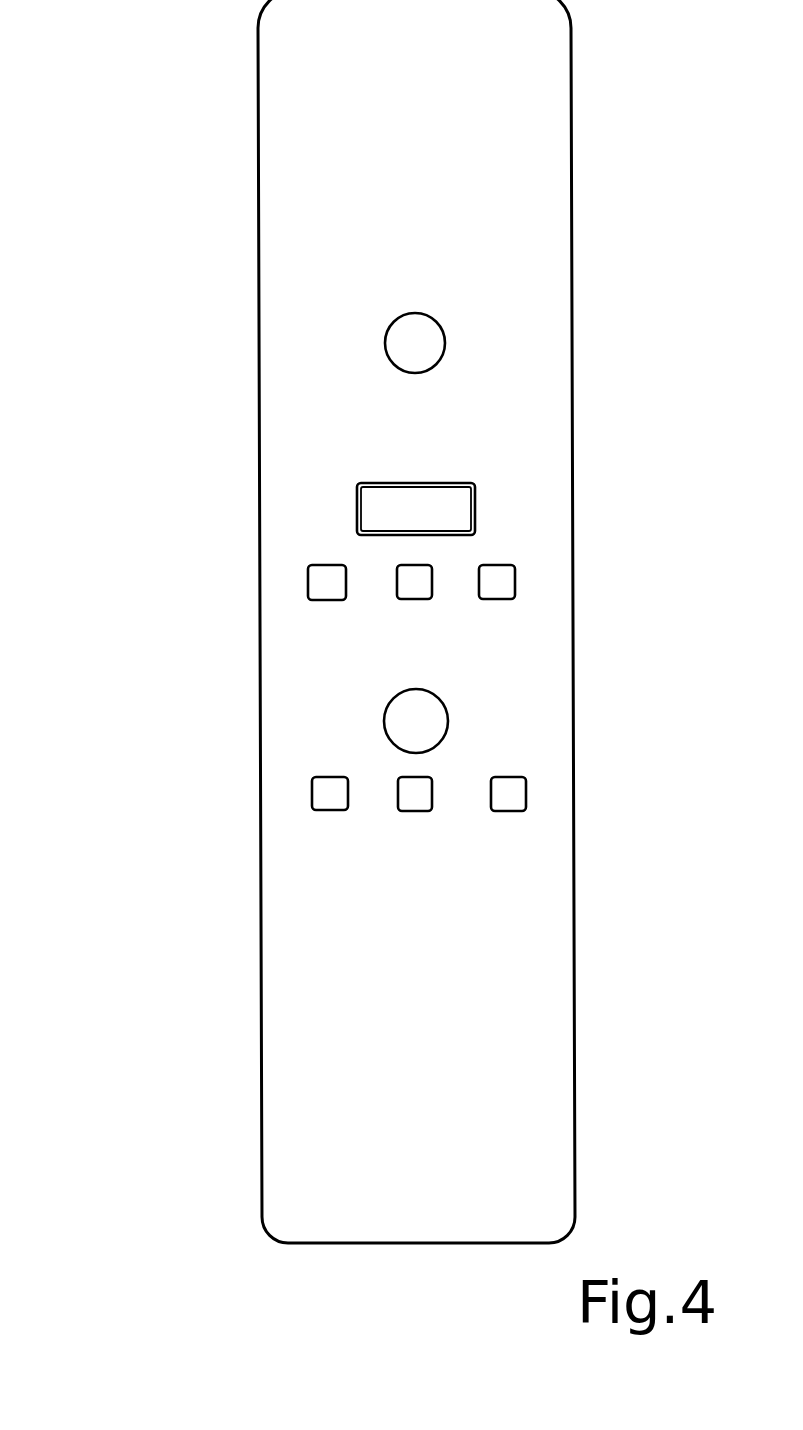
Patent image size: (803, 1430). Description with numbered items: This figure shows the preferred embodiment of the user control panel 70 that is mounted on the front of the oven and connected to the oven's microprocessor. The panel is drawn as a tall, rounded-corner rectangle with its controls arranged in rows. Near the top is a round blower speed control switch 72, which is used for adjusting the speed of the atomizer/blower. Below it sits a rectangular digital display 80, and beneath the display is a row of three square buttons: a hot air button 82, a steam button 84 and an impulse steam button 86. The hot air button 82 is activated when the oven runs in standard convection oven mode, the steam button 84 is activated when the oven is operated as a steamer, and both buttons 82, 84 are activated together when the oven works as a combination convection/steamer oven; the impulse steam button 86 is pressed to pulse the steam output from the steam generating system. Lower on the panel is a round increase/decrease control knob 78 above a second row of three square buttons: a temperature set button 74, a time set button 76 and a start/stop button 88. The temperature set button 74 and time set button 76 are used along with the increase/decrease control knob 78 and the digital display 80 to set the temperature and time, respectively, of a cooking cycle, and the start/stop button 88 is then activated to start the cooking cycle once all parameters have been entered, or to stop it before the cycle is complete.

The user control panel 70 is at (170, 183).
The blower speed control switch 72 is at (443, 333).
The temperature set button 74 is at (312, 795).
The time set button 76 is at (398, 782).
The increase/decrease control knob 78 is at (440, 714).
The digital display 80 is at (477, 509).
The hot air button 82 is at (308, 575).
The steam button 84 is at (432, 570).
The impulse steam button 86 is at (515, 590).
The start/stop button 88 is at (526, 788).